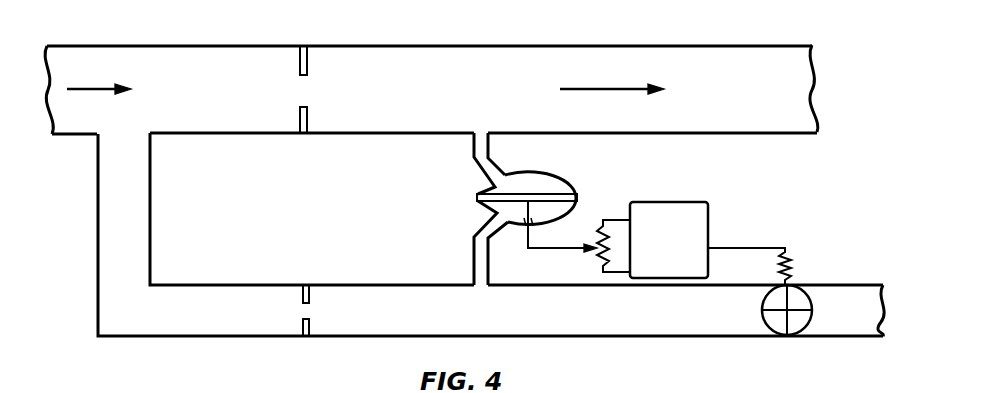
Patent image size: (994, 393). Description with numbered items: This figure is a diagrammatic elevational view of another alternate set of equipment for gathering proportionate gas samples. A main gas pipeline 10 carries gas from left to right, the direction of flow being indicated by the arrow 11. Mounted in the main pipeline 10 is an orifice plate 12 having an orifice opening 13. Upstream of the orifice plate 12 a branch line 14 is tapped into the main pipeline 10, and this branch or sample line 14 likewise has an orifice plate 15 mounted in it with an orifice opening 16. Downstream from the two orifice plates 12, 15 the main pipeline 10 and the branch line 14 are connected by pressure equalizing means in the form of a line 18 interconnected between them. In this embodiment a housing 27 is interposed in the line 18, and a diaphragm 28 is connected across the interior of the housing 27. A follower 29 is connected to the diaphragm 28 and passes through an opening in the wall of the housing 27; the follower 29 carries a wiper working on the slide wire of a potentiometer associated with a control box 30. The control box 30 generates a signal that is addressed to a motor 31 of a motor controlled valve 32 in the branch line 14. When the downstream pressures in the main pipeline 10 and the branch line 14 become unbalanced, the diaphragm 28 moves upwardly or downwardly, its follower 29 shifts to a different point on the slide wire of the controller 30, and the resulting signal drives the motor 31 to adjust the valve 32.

The main gas pipeline 10 is at (174, 46).
The arrow 11 is at (91, 89).
The orifice plate 12 is at (307, 50).
The orifice opening 13 is at (308, 108).
The branch line 14 is at (97, 222).
The orifice plate 15 is at (303, 290).
The orifice opening 16 is at (303, 324).
The line 18 is at (474, 150).
The housing 27 is at (554, 180).
The diaphragm 28 is at (556, 212).
The follower 29 is at (525, 238).
The control box 30 is at (669, 222).
The motor 31 is at (795, 256).
The motor controlled valve 32 is at (805, 326).